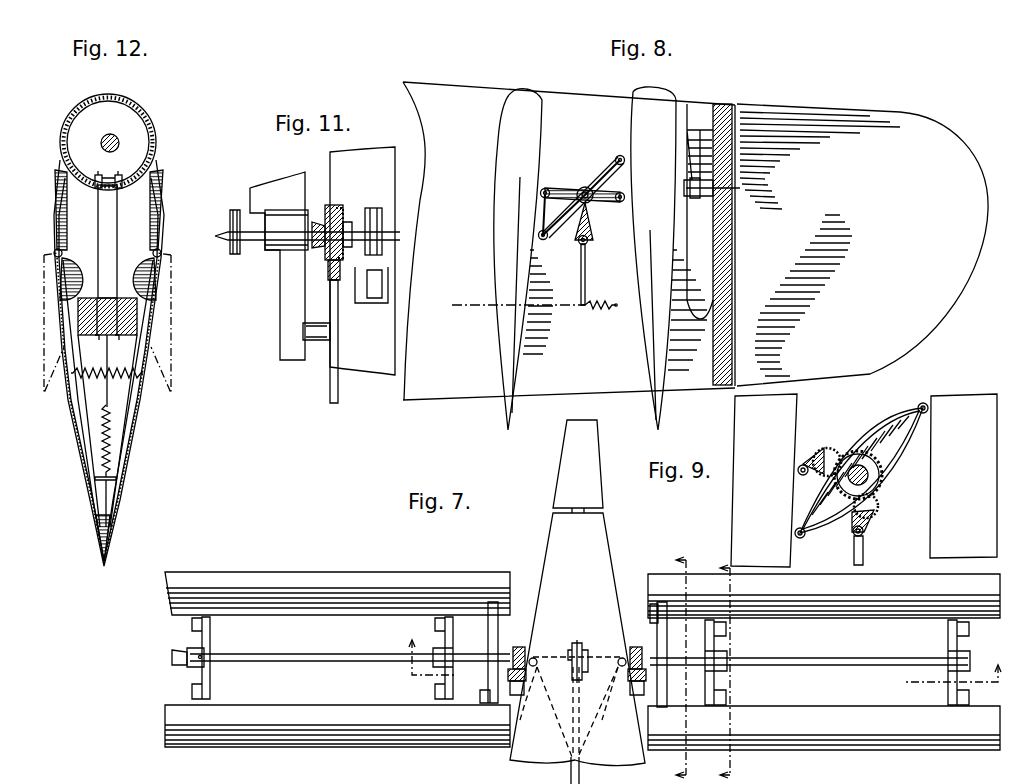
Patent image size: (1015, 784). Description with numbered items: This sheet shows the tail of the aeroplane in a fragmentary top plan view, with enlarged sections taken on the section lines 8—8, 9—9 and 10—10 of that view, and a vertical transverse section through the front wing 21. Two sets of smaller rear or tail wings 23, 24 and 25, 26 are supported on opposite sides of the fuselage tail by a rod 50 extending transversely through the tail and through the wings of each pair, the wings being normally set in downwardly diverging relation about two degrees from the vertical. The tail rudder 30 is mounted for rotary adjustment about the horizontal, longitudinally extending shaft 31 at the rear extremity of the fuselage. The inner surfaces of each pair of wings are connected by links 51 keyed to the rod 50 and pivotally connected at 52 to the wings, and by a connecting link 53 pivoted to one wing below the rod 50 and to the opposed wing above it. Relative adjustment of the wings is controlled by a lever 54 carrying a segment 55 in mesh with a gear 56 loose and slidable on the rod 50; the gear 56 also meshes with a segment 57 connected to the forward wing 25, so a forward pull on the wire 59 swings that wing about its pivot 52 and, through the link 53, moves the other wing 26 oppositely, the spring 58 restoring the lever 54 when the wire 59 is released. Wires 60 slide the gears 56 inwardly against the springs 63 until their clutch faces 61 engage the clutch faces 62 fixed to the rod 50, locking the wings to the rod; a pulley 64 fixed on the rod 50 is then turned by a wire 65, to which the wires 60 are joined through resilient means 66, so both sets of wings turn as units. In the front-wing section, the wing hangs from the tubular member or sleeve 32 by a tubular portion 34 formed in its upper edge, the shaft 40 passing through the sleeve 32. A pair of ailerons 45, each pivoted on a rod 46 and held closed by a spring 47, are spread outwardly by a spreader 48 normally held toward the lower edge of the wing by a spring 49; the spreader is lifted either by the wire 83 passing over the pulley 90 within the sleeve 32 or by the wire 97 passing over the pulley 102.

In FIG. 7, the section line 8— 8 is at (715, 668).
In FIG. 7, the section line 9— 9 is at (670, 663).
In FIG. 7, the section line 10— 10 is at (694, 666).
In FIG. 12, the front wing 21 is at (72, 434).
In FIG. 7, the rear wing 23 is at (372, 738).
In FIG. 7, the rear wing 24 is at (370, 585).
In FIG. 8, the rear wing 25 is at (492, 255).
In FIG. 7, the rear wing 25 is at (870, 735).
In FIG. 8, the rear wing 26 is at (678, 300).
In FIG. 9, the rear wing 26 is at (902, 578).
In FIG. 7, the rear wing 26 is at (900, 590).
In FIG. 8, the tail rudder 30 is at (835, 112).
In FIG. 7, the tail rudder 30 is at (565, 464).
In FIG. 8, the shaft 31 is at (732, 210).
In FIG. 12, the tubular member or sleeve 32 is at (146, 113).
In FIG. 12, the tubular portion 34 is at (131, 103).
In FIG. 12, the shaft 40 is at (104, 136).
In FIG. 12, the ailerons 45 is at (58, 322).
In FIG. 12, the rod 46 is at (54, 253).
In FIG. 12, the spring 47 is at (120, 374).
In FIG. 12, the spreader 48 is at (136, 310).
In FIG. 12, the spring 49 is at (118, 453).
In FIG. 11, the rod 50 is at (388, 232).
In FIG. 8, the rod 50 is at (584, 188).
In FIG. 9, the rod 50 is at (868, 481).
In FIG. 7, the rod 50 is at (330, 654).
In FIG. 8, the links 51 is at (612, 158).
In FIG. 7, the links 51 is at (212, 640).
In FIG. 7, the pivotal connection 52 is at (192, 690).
In FIG. 11, the connecting link 53 is at (380, 270).
In FIG. 8, the connecting link 53 is at (586, 187).
In FIG. 9, the connecting link 53 is at (895, 420).
In FIG. 7, the connecting link 53 is at (490, 602).
In FIG. 11, the lever 54 is at (330, 390).
In FIG. 8, the lever 54 is at (587, 260).
In FIG. 9, the lever 54 is at (854, 560).
In FIG. 11, the segment 55 is at (341, 270).
In FIG. 8, the segment 55 is at (576, 242).
In FIG. 9, the segment 55 is at (876, 520).
In FIG. 11, the gear 56 is at (344, 215).
In FIG. 9, the gear 56 is at (882, 473).
In FIG. 7, the gear 56 is at (519, 645).
In FIG. 11, the segment 57 is at (378, 215).
In FIG. 9, the segment 57 is at (814, 458).
In FIG. 7, the segment 57 is at (515, 695).
In FIG. 8, the spring 58 is at (604, 309).
In FIG. 8, the wire 59 is at (564, 309).
In FIG. 11, the wires 60 is at (305, 195).
In FIG. 7, the wires 60 is at (573, 697).
In FIG. 11, the clutch face 61 is at (331, 207).
In FIG. 11, the clutch face 62 is at (305, 252).
In FIG. 11, the spring 63 is at (320, 250).
In FIG. 7, the spring 63 is at (619, 658).
In FIG. 7, the pulley 64 is at (570, 652).
In FIG. 7, the wire 65 is at (571, 776).
In FIG. 7, the resilient means 66 is at (576, 712).
In FIG. 12, the wire 83 is at (118, 228).
In FIG. 12, the pulley 90 is at (108, 142).
In FIG. 12, the wire 97 is at (98, 212).
In FIG. 12, the pulley 102 is at (100, 172).